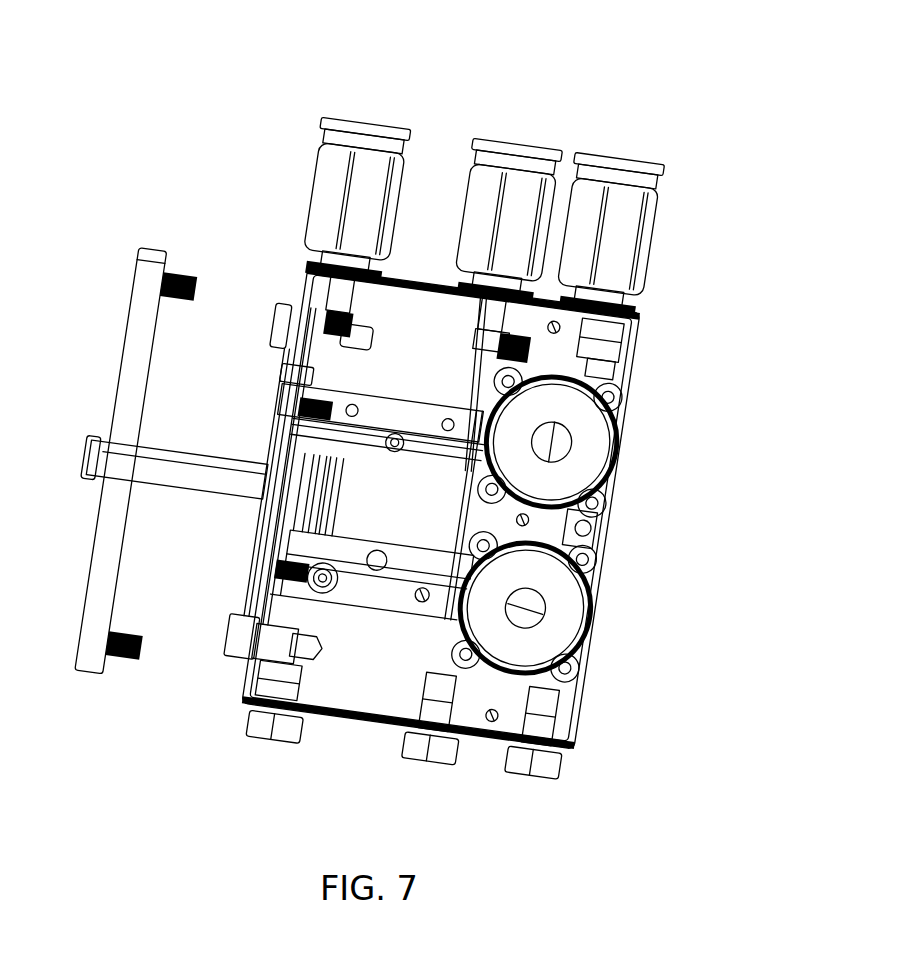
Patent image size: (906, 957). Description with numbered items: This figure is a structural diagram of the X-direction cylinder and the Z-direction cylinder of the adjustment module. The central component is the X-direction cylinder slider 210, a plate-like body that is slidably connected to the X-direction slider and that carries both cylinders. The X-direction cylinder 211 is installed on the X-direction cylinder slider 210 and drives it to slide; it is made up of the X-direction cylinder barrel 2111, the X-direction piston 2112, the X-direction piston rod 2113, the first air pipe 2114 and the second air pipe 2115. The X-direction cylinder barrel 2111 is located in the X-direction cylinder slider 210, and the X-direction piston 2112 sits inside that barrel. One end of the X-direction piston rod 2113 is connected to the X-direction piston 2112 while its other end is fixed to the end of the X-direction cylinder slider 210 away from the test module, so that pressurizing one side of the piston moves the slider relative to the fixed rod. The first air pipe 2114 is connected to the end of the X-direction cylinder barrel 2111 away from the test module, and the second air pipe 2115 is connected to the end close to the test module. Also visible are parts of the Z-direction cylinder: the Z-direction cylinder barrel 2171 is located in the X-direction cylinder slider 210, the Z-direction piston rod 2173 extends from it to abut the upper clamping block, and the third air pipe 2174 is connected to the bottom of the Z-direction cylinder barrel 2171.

The X-direction cylinder slider 210 is at (358, 722).
The X-direction cylinder 211 is at (265, 341).
The X-direction cylinder barrel 2111 is at (422, 498).
The X-direction piston 2112 is at (283, 380).
The X-direction piston rod 2113 is at (226, 473).
The first air pipe 2114 is at (336, 378).
The second air pipe 2115 is at (483, 395).
The Z-direction cylinder barrel 2171 is at (577, 478).
The Z-direction piston rod 2173 is at (563, 438).
The third air pipe 2174 is at (588, 378).